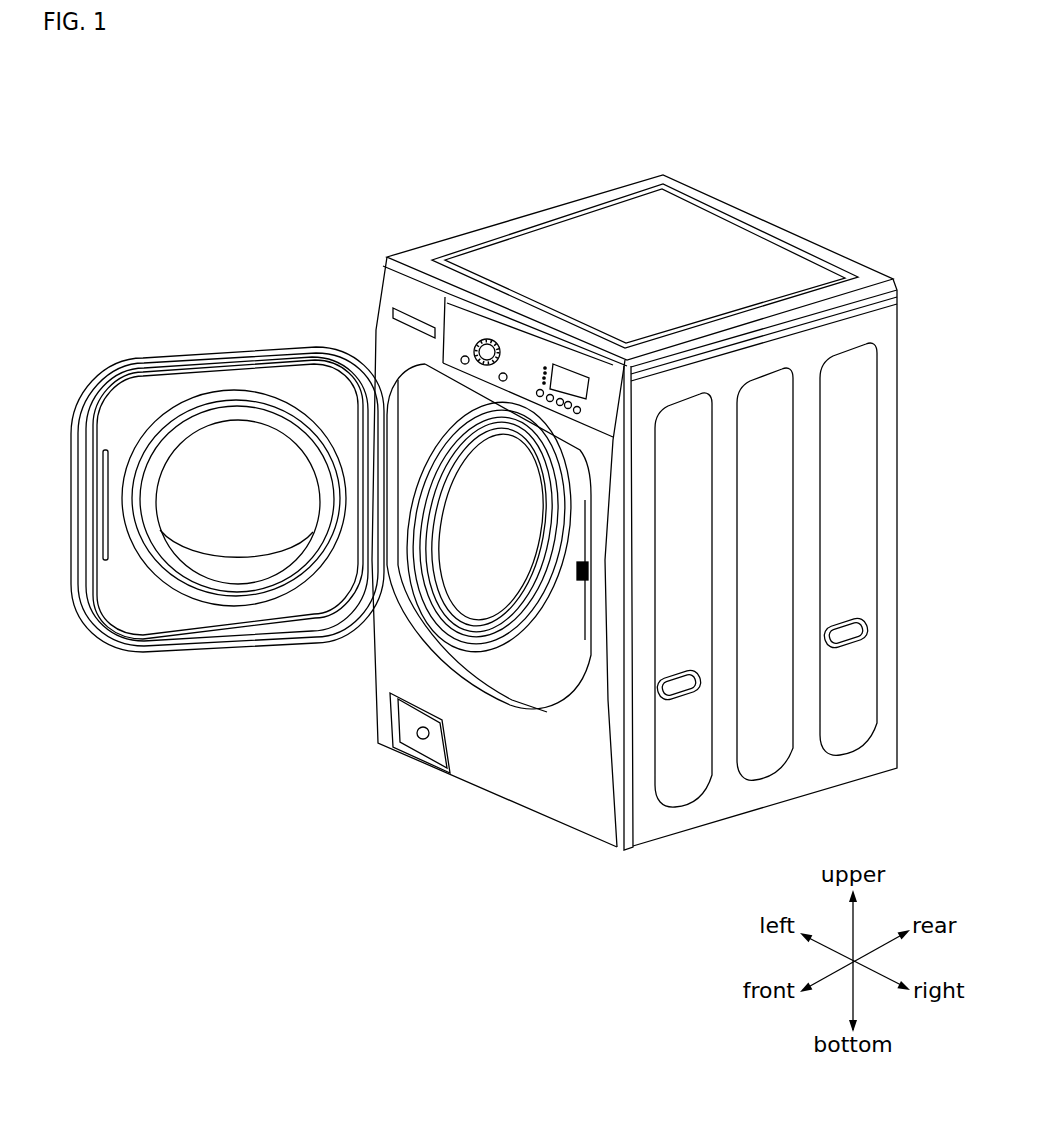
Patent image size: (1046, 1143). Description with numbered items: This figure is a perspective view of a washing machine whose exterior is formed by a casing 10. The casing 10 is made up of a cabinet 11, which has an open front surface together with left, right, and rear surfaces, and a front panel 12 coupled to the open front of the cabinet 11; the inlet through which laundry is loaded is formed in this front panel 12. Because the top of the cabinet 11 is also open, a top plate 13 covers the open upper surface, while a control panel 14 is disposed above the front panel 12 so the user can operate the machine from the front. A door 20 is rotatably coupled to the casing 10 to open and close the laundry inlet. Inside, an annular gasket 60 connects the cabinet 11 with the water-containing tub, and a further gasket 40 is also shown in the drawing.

The casing 10 is at (781, 263).
The cabinet 11 is at (563, 777).
The front panel 12 is at (514, 598).
The top plate 13 is at (522, 365).
The control panel 14 is at (393, 288).
The door 20 is at (203, 618).
The gasket 40 is at (488, 473).
The gasket 60 is at (470, 600).